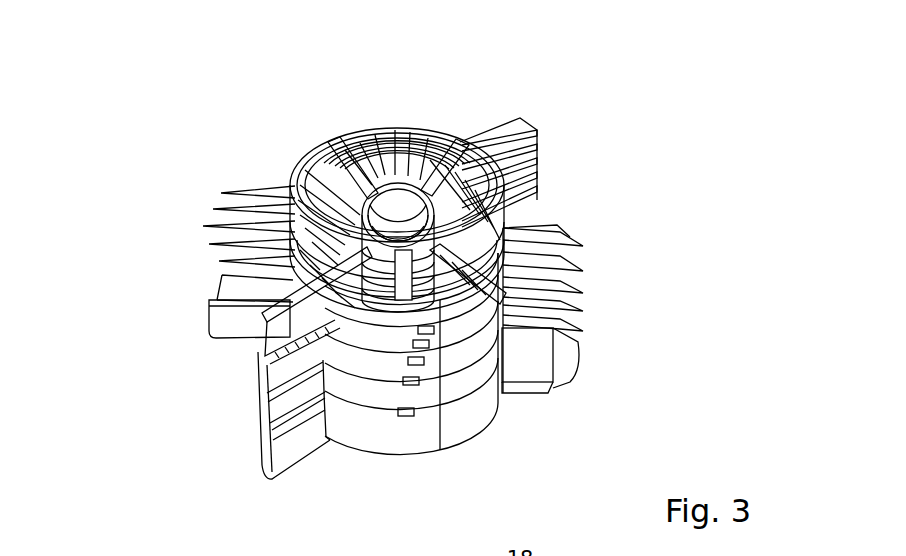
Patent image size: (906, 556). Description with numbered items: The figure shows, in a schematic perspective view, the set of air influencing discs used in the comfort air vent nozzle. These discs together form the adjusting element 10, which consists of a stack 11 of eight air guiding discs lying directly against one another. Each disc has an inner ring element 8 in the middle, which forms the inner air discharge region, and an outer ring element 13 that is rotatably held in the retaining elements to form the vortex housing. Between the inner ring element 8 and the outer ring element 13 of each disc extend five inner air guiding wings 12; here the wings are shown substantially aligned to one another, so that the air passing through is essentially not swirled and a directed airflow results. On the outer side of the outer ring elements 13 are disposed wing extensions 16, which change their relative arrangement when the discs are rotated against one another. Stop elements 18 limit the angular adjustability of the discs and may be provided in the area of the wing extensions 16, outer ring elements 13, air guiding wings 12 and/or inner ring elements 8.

The inner ring element 8 is at (387, 180).
The adjusting element 10 is at (147, 472).
The stack 11 is at (582, 113).
The inner air guiding wing 12 is at (437, 160).
The outer ring element 13 is at (306, 160).
The wing extension 16 is at (530, 153).
The stop element 18 is at (566, 346).